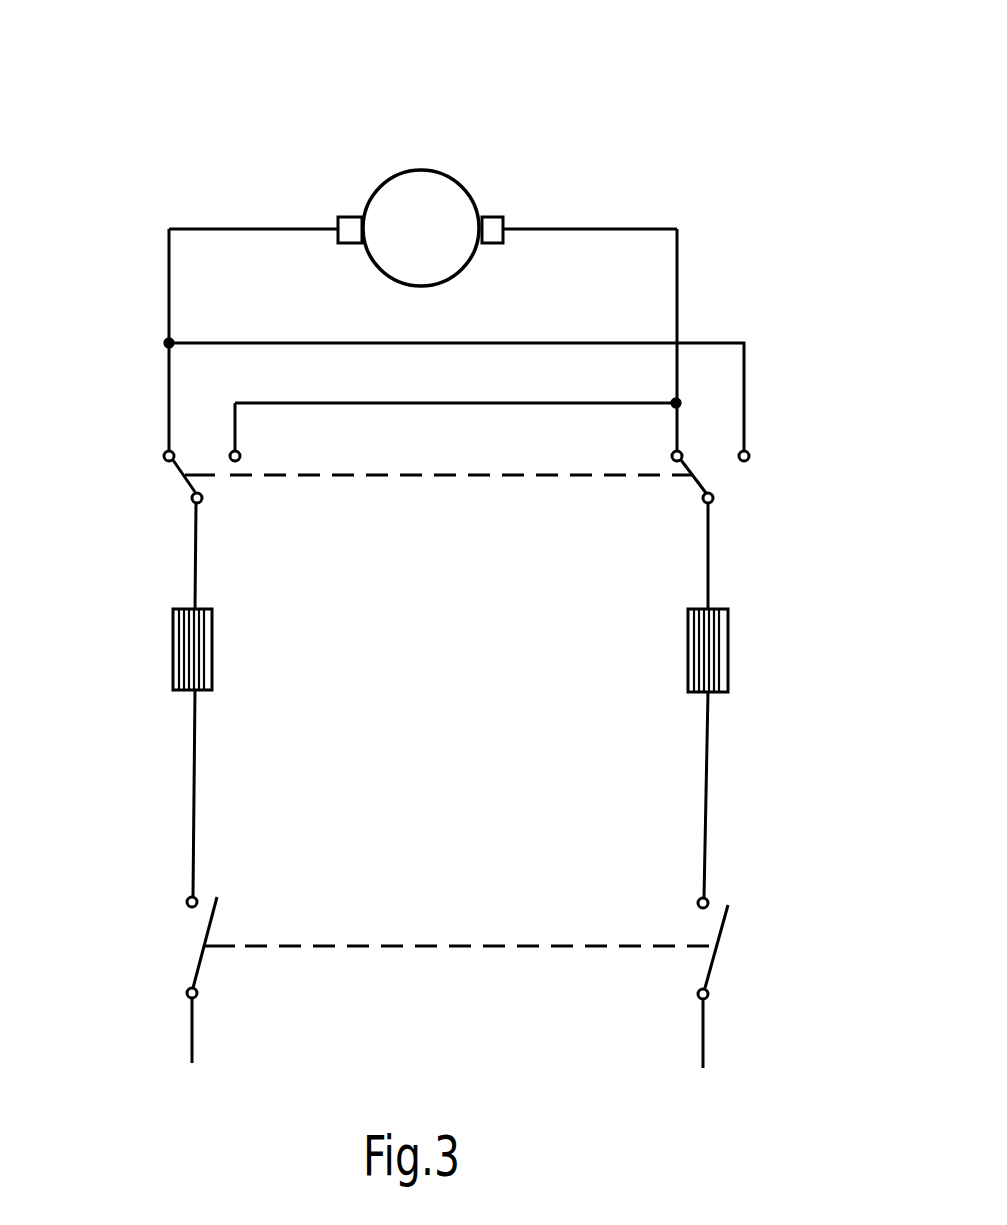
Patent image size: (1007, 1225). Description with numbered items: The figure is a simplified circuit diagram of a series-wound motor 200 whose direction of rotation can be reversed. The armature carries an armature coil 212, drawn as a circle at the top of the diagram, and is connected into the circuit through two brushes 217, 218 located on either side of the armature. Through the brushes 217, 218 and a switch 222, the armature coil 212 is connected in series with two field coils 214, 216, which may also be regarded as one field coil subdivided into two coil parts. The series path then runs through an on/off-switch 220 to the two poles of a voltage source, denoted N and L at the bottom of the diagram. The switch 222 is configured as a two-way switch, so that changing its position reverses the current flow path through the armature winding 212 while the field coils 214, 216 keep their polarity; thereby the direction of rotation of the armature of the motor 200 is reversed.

The motor 200 is at (676, 160).
The armature coil 212 is at (432, 193).
The field coil 214 is at (175, 641).
The field coil 216 is at (728, 646).
The brush 217 is at (352, 217).
The brush 218 is at (497, 217).
The on/off-switch 220 is at (487, 936).
The switch 222 is at (493, 478).